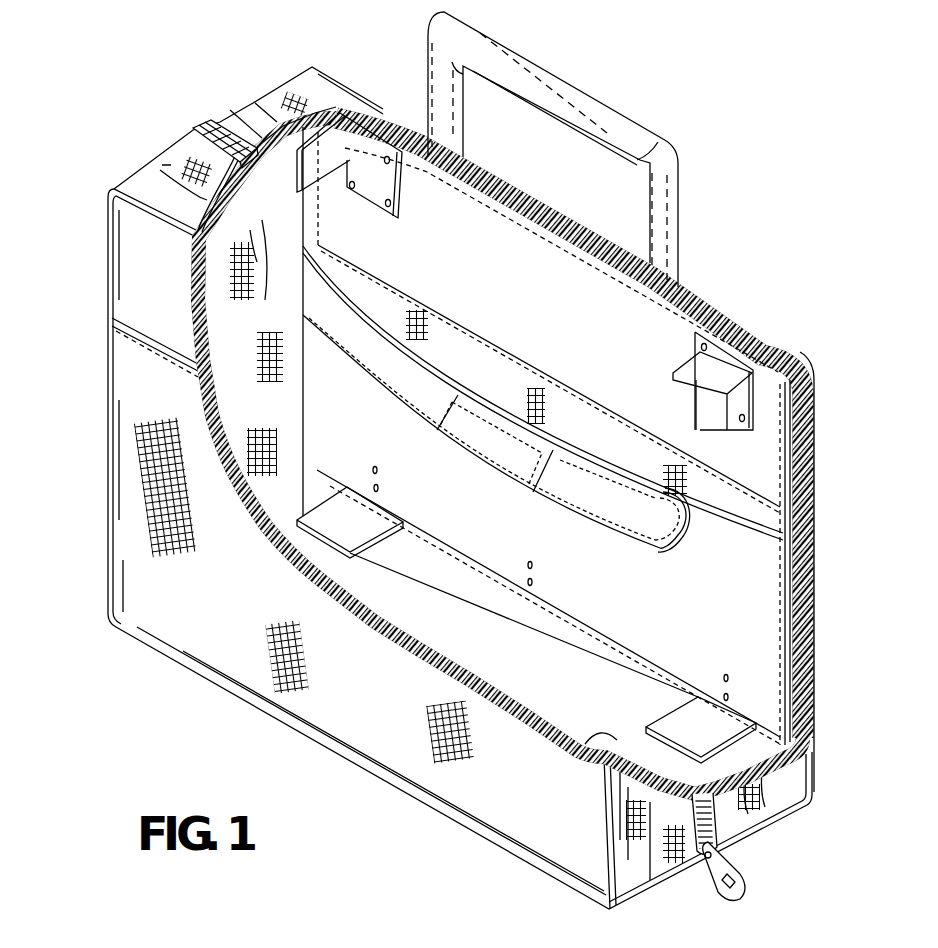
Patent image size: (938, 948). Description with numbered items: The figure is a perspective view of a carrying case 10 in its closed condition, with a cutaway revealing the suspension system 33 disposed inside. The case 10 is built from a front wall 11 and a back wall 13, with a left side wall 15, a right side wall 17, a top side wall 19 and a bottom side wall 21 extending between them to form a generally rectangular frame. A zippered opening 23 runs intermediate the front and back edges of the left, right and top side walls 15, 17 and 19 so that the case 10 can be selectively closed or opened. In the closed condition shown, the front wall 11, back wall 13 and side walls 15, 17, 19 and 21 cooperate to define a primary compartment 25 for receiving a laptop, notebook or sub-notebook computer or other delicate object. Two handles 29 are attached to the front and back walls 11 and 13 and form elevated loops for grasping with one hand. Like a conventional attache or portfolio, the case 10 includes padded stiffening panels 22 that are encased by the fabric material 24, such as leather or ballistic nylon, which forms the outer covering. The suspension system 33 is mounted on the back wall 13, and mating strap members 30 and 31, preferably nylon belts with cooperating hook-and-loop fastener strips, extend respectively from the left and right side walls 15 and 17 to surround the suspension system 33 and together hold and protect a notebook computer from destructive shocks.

The carrying case 10 is at (90, 681).
The front wall 11 is at (349, 723).
The back wall 13 is at (813, 399).
The left side wall 15 is at (108, 352).
The right side wall 17 is at (783, 782).
The top side wall 19 is at (297, 82).
The bottom side wall 21 is at (578, 752).
The stiffening panels 22 is at (728, 320).
The zippered opening 23 is at (200, 125).
The fabric material 24 is at (785, 347).
The primary compartment 25 is at (472, 645).
The handles 29 is at (681, 175).
The mating strap member 30 is at (427, 407).
The mating strap member 31 is at (761, 557).
The suspension system 33 is at (779, 461).